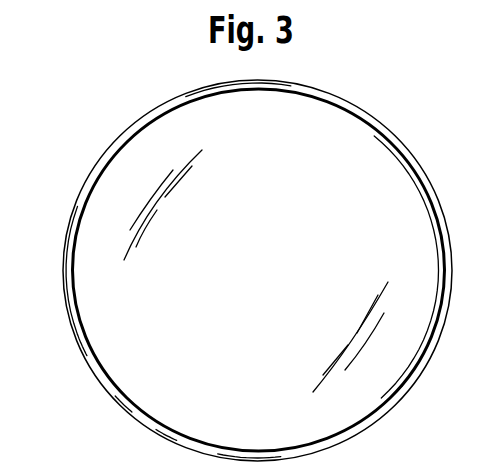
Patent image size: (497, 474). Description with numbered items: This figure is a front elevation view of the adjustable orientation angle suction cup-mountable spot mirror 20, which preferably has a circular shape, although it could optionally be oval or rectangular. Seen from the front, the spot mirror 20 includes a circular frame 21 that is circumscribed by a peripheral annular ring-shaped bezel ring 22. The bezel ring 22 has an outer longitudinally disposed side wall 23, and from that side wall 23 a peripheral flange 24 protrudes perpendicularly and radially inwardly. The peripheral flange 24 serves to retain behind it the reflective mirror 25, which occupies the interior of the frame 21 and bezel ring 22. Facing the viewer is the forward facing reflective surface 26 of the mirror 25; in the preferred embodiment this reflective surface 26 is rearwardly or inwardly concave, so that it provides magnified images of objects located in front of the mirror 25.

The spot mirror 20 is at (372, 104).
The circular frame 21 is at (164, 102).
The bezel ring 22 is at (101, 165).
The side wall 23 is at (78, 194).
The peripheral flange 24 is at (125, 131).
The reflective mirror 25 is at (168, 326).
The reflective surface 26 is at (313, 323).